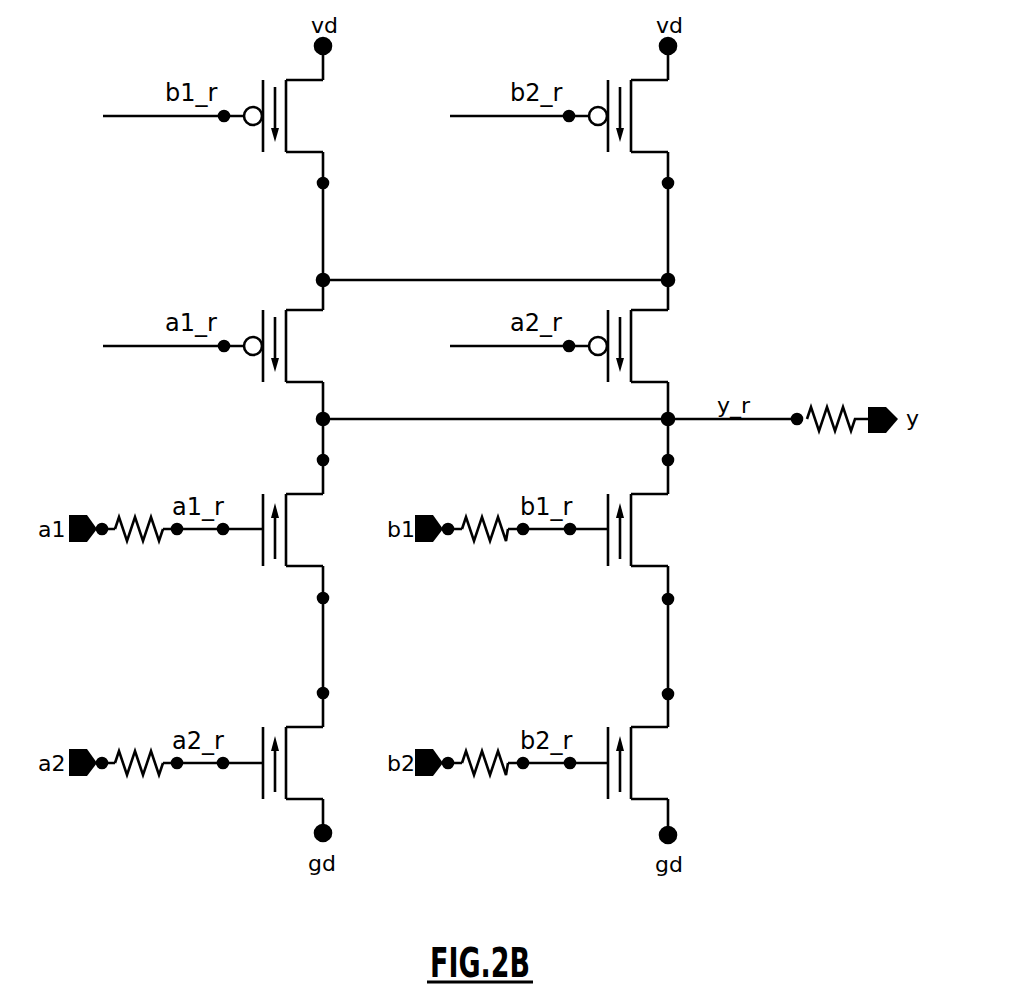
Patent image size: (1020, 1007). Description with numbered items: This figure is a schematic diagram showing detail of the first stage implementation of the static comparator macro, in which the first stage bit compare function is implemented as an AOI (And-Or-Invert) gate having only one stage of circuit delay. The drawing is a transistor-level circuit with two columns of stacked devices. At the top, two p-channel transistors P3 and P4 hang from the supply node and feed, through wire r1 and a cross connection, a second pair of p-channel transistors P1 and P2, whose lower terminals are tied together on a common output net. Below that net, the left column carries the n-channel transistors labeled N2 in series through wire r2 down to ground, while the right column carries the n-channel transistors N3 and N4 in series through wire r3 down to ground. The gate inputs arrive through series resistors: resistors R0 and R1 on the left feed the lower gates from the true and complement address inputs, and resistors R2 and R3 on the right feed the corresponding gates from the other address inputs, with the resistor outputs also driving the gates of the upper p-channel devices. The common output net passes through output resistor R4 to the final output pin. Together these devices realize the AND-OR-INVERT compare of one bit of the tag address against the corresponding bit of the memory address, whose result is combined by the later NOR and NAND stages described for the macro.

The PMOS transistor P1 is at (304, 334).
The PMOS transistor P2 is at (649, 327).
The PMOS transistor P3 is at (304, 93).
The PMOS transistor P4 is at (649, 93).
The NMOS transistor N2 is at (315, 624).
The NMOS transistor N3 is at (660, 508).
The NMOS transistor N4 is at (660, 741).
The interconnect wire r1 is at (339, 231).
The interconnect wire r2 is at (339, 646).
The interconnect wire r3 is at (684, 646).
The resistor R0 is at (128, 514).
The resistor R1 is at (128, 748).
The resistor R2 is at (473, 514).
The resistor R3 is at (473, 748).
The resistor R4 is at (838, 401).